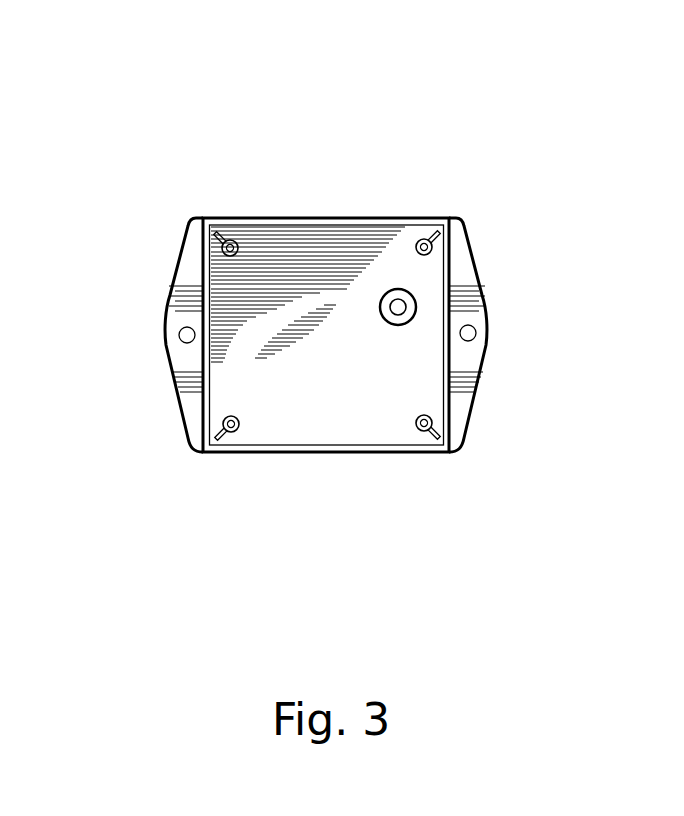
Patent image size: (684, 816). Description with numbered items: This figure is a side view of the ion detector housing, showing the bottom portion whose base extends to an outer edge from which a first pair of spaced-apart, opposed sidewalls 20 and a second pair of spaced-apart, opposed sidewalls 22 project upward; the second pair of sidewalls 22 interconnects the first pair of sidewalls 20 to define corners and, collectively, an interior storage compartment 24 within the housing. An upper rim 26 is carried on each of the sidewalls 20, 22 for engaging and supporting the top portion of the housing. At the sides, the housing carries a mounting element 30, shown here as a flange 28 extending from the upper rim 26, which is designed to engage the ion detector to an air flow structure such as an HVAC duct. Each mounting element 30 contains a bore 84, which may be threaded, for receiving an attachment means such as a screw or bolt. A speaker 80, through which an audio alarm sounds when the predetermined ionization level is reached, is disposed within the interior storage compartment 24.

The first pair of spaced-apart, opposed sidewalls 20 is at (295, 218).
The second pair of spaced-apart, opposed sidewalls 22 is at (483, 380).
The interior storage compartment 24 is at (343, 268).
The upper rim 26 is at (247, 225).
The flange 28 is at (182, 293).
The mounting element 30 is at (143, 391).
The speaker 80 is at (416, 305).
The bore 84 is at (474, 328).